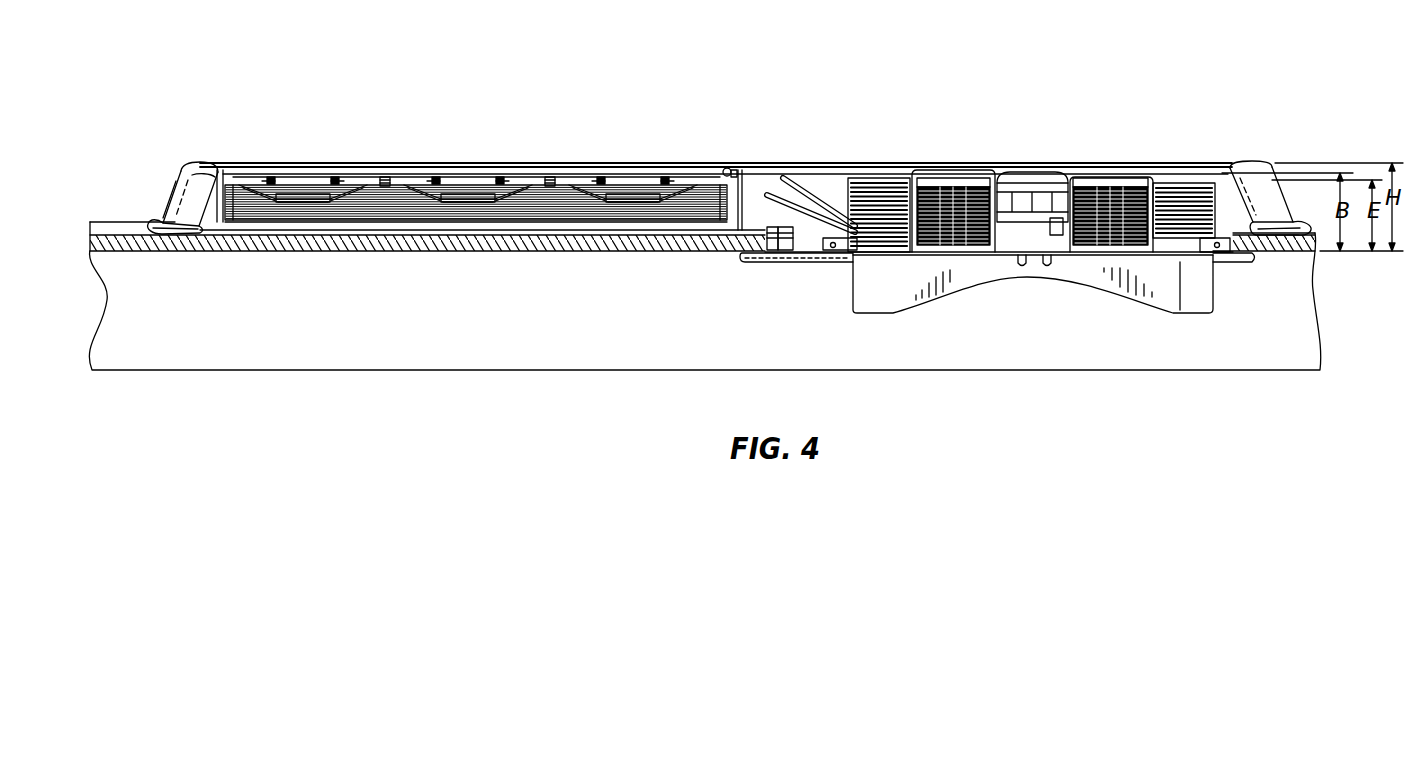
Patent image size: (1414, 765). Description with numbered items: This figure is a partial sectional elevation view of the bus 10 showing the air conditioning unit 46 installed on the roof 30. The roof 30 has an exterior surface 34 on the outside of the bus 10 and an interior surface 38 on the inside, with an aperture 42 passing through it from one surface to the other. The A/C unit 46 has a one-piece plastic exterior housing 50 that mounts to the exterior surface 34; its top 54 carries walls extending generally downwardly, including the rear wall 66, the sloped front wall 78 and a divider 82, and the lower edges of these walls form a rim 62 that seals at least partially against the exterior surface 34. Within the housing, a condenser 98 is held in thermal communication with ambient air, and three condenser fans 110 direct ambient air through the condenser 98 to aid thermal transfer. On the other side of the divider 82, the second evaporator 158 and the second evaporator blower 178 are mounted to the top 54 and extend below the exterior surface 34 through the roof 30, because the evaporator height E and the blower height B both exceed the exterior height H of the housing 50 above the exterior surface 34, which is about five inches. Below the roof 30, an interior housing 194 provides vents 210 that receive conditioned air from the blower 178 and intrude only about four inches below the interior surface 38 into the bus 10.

The bus 10 is at (1147, 87).
The roof 30 is at (110, 222).
The exterior surface 34 is at (143, 228).
The interior surface 38 is at (130, 252).
The aperture 42 is at (780, 245).
The air conditioning unit 46 is at (813, 156).
The exterior housing 50 is at (204, 166).
The top 54 is at (745, 163).
The rim 62 is at (193, 242).
The rear wall 66 is at (181, 176).
The sloped front wall 78 is at (1267, 200).
The divider 82 is at (742, 188).
The condenser 98 is at (385, 205).
The condenser fans 110 is at (613, 163).
The second evaporator 158 is at (1187, 198).
The second evaporator blower 178 is at (1090, 198).
The interior housing 194 is at (1193, 298).
The vents 210 is at (853, 280).